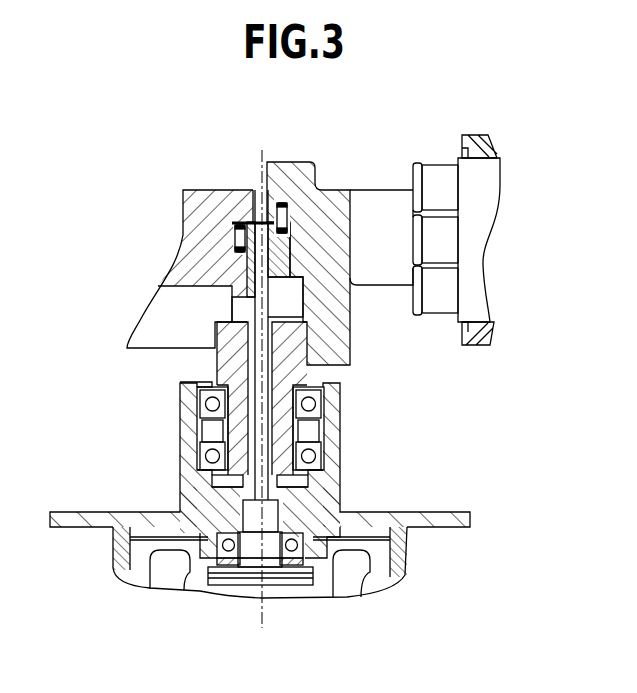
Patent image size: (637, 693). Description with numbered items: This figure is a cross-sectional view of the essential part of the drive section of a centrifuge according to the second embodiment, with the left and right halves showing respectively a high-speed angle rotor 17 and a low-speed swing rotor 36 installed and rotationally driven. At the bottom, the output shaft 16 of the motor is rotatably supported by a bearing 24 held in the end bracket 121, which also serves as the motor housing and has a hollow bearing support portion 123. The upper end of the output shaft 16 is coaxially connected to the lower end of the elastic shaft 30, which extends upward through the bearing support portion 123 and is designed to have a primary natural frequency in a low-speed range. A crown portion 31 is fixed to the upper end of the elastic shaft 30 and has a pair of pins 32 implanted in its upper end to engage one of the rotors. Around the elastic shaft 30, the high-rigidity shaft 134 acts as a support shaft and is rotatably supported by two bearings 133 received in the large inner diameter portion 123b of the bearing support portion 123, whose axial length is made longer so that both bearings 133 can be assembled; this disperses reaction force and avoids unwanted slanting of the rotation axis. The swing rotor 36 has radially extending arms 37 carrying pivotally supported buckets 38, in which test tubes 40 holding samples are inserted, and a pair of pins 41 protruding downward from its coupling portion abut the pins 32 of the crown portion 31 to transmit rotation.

The angle rotor 17 is at (220, 200).
The pins 41 is at (283, 203).
The arms 37 is at (328, 195).
The low-speed swing rotor 36 is at (376, 180).
The test tubes 40 is at (436, 178).
The buckets 38 is at (492, 144).
The pins 32 is at (240, 237).
The crown portion 31 is at (247, 290).
The elastic shaft 30 is at (250, 310).
The high-rigidity shaft 134 is at (297, 353).
The bearings 133 is at (312, 456).
The large inner diameter portion 123b is at (203, 432).
The bearing support portion 123 is at (190, 491).
The end bracket 121 is at (340, 494).
The bearing 24 is at (296, 551).
The output shaft 16 is at (252, 566).